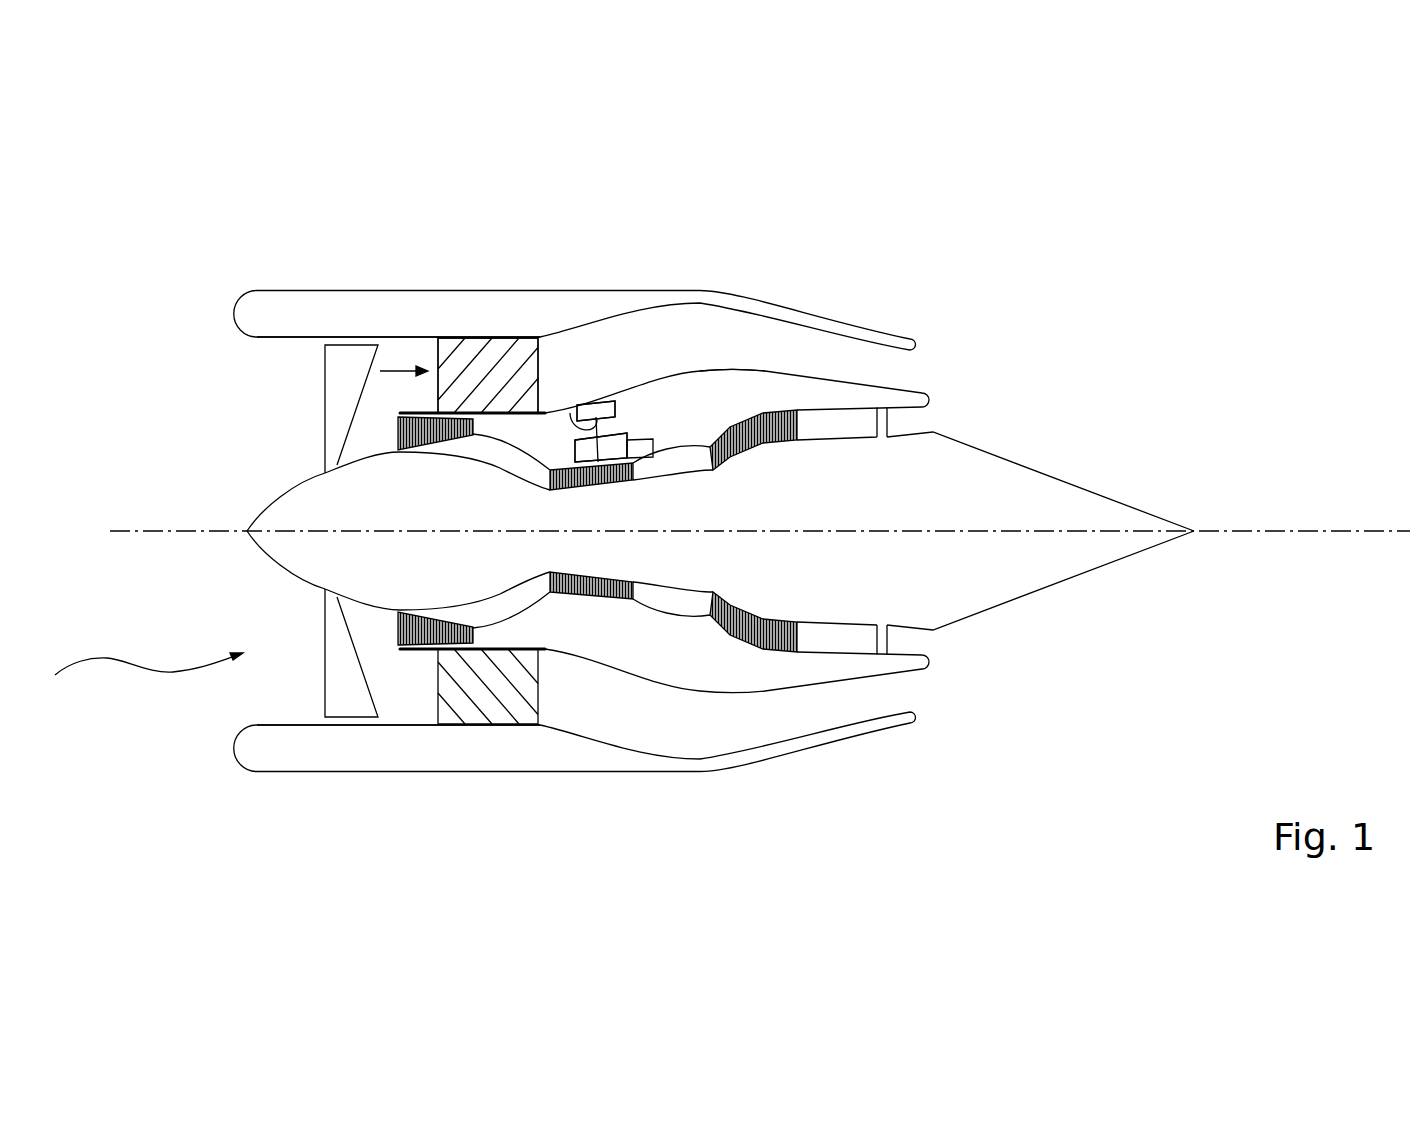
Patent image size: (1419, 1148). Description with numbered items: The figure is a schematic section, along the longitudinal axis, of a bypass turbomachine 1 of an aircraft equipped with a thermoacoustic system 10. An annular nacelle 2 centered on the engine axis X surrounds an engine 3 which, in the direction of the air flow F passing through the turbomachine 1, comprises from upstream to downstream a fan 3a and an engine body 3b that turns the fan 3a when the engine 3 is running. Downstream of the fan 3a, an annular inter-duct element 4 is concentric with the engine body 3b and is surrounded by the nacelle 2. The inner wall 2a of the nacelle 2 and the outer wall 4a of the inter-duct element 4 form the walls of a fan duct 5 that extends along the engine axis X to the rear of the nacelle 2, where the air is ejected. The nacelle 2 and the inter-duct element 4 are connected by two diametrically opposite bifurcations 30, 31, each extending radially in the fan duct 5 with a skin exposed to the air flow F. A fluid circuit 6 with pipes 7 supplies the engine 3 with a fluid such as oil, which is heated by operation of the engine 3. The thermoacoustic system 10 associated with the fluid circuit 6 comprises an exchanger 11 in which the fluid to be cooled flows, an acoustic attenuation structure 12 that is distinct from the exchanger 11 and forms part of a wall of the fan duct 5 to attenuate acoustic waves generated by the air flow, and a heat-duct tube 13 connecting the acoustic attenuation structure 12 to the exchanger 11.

The bypass turbomachine 1 is at (1030, 268).
The annular nacelle 2 is at (322, 312).
The inner wall of the nacelle 2a is at (400, 338).
The engine 3 is at (867, 470).
The fan 3a is at (337, 409).
The engine body 3b is at (672, 560).
The annular inter-duct element 4 is at (797, 387).
The outer wall of the inter-duct element 4a is at (763, 372).
The fan duct 5 is at (698, 332).
The fluid circuit 6 is at (653, 416).
The pipes 7 is at (600, 412).
The thermoacoustic system 10 is at (577, 410).
The exchanger 11 is at (457, 352).
The acoustic attenuation structure 12 is at (582, 376).
The heat-duct tube 13 is at (577, 437).
The bifurcation 30 is at (462, 345).
The bifurcation 31 is at (477, 700).
The longitudinal axis X is at (1280, 531).
The air flow F is at (143, 660).